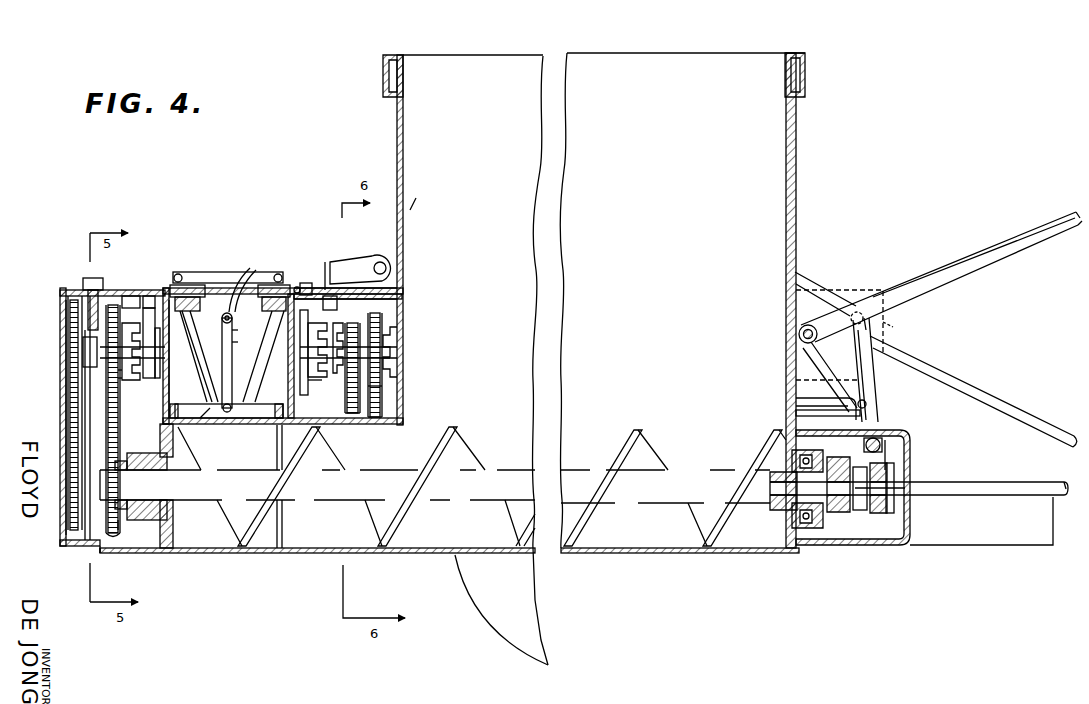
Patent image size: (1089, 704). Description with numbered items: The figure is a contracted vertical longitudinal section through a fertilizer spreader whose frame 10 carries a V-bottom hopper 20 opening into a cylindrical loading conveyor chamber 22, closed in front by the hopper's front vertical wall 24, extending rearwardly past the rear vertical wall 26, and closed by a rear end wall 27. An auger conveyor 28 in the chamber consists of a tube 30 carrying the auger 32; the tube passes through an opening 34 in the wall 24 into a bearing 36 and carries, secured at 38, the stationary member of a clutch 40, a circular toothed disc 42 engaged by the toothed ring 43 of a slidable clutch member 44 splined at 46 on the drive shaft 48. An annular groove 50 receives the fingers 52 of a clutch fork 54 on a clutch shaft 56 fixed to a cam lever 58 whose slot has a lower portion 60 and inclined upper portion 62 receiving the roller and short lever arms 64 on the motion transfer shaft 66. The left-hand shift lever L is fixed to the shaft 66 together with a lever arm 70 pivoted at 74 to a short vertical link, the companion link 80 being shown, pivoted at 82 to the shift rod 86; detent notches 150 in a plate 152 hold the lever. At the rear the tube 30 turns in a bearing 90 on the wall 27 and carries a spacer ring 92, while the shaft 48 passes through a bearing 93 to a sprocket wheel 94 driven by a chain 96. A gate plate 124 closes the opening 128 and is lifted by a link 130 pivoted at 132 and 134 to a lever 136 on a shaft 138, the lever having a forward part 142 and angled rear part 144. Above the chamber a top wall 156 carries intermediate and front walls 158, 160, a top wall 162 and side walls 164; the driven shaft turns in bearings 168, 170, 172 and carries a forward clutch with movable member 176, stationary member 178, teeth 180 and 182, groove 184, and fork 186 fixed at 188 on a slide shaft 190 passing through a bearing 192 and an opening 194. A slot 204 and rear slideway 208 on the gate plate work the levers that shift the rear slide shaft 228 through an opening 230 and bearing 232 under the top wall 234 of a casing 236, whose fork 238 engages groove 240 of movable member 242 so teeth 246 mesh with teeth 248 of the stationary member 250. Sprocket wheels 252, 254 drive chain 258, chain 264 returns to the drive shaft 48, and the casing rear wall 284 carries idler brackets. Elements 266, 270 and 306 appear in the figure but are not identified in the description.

The frame 10 is at (1056, 527).
The V-bottom hopper 20 is at (669, 52).
The loading conveyor chamber 22 is at (392, 428).
The front vertical wall 24 is at (797, 220).
The rear vertical wall 26 is at (404, 147).
The rear end wall 27 is at (165, 540).
The auger conveyor 28 is at (653, 428).
The tube 30 is at (516, 470).
The auger 32 is at (622, 452).
The opening 34 is at (776, 515).
The bearing 36 is at (818, 532).
The securement of stationary clutch member 38 is at (845, 528).
The clutch 40 is at (904, 455).
The circular toothed disc 42 is at (861, 516).
The toothed ring 43 is at (866, 447).
The slidable clutch member 44 is at (900, 522).
The spline connection 46 is at (905, 482).
The drive shaft 48 is at (993, 487).
The annular groove 50 is at (878, 522).
The opposed fingers 52 is at (892, 459).
The clutch fork 54 is at (902, 452).
The clutch shaft 56 is at (884, 444).
The cam lever 58 is at (886, 387).
The lower slot portion 60 is at (882, 401).
The upper slot portion 62 is at (888, 344).
The roller and short lever arms 64 is at (852, 290).
The motion transfer shaft 66 is at (799, 341).
The lever arm 70 is at (822, 368).
The pivot 74 is at (798, 414).
The short vertical link 80 is at (963, 382).
The pivot 82 is at (861, 393).
The left-hand shift rod 86 is at (796, 400).
The bearing 90 is at (148, 523).
The spacer ring 92 is at (127, 460).
The bearing 93 is at (120, 530).
The sprocket wheel 94 is at (106, 522).
The chain 96 is at (119, 440).
The gate plate 124 is at (264, 418).
The opening 128 is at (273, 523).
The vertical link 130 is at (246, 380).
The pivot 132 is at (194, 421).
The pivot 134 is at (228, 313).
The lever 136 is at (328, 262).
The left-hand shaft 138 is at (392, 269).
The forward part 142 is at (352, 261).
The rear part 144 is at (236, 292).
The detent notches 150 is at (893, 333).
The plate 152 is at (805, 306).
The top wall 156 is at (331, 420).
The intermediate wall 158 is at (175, 402).
The front wall 160 is at (300, 410).
The top wall 162 is at (400, 291).
The side walls 164 is at (385, 299).
The front bearing 168 is at (396, 341).
The intermediate bearing 170 is at (315, 394).
The rear bearing 172 is at (195, 356).
The movable clutch member 176 is at (312, 290).
The stationary clutch member 178 is at (352, 332).
The forwardly extending teeth 180 is at (300, 378).
The peripheral teeth 182 is at (360, 351).
The annular groove 184 is at (305, 285).
The clutch fork 186 is at (292, 283).
The fixing 188 is at (297, 283).
The slide shaft 190 is at (255, 267).
The bearing 192 is at (337, 298).
The opening 194 is at (246, 328).
The longitudinal slot 204 is at (245, 406).
The rear slideway 208 is at (229, 409).
The rear slide shaft 228 is at (135, 296).
The opening 230 is at (168, 293).
The bearing 232 is at (108, 285).
The top wall 234 is at (75, 289).
The casing 236 is at (56, 375).
The clutch fork 238 is at (150, 296).
The annular groove 240 is at (148, 326).
The movable clutch member 242 is at (135, 333).
The rearwardly extending teeth 246 is at (136, 380).
The peripheral teeth 248 is at (132, 378).
The stationary clutch member 250 is at (83, 356).
The forward sprocket wheel 252 is at (383, 331).
The rear sprocket wheel 254 is at (385, 361).
The chain 258 is at (379, 386).
The chain 264 is at (74, 453).
The bearing 266 is at (356, 420).
The bar 270 is at (226, 277).
The rear wall 284 is at (68, 433).
The pin 306 is at (245, 340).
The left-hand shift lever L is at (958, 257).